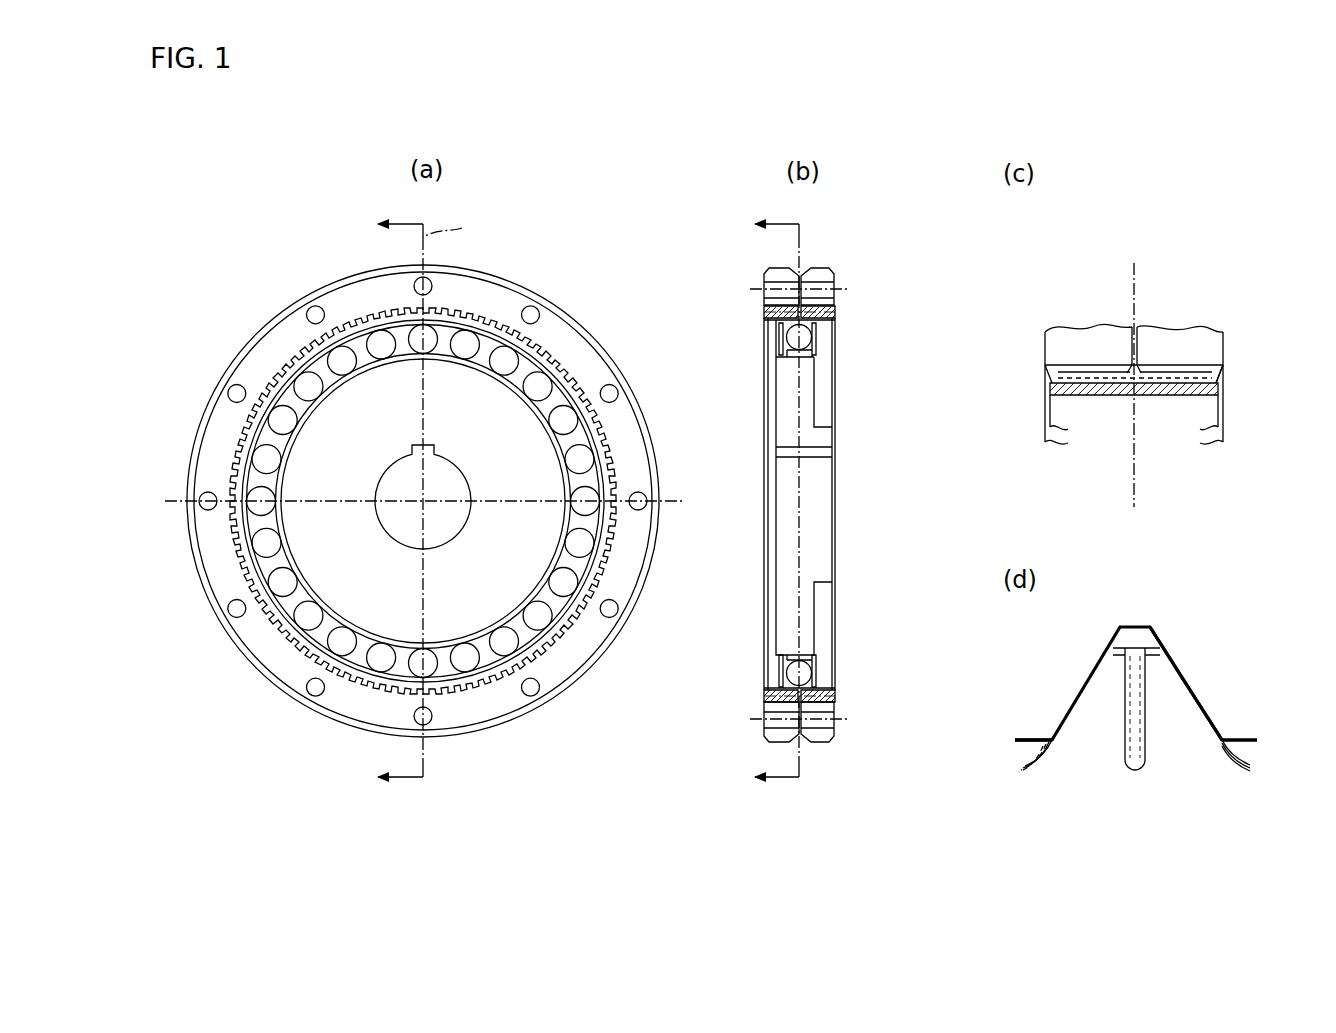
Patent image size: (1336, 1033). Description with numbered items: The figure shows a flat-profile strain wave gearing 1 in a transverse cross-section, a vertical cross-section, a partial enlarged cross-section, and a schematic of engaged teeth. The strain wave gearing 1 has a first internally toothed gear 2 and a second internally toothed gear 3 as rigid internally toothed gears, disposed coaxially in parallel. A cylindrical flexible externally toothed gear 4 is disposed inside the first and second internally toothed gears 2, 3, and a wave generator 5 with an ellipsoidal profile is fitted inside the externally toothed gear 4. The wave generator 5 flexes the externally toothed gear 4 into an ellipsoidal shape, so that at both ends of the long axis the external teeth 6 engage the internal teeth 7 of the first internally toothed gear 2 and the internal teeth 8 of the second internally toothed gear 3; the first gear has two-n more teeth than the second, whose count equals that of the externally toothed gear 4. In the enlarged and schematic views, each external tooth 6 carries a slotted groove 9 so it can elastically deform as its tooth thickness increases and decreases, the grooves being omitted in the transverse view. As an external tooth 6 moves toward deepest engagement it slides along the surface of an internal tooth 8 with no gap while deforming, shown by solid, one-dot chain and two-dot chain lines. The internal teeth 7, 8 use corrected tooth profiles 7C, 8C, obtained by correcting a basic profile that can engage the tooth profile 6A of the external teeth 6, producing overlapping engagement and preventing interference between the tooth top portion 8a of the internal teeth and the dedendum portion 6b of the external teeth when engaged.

The strain wave gearing 1 is at (560, 266).
The first internally toothed gear 2 is at (837, 302).
The second internally toothed gear 3 is at (594, 386).
The flexible externally toothed gear 4 is at (597, 424).
The wave generator 5 is at (537, 559).
The external tooth 6 is at (567, 377).
The internal tooth of the first internally toothed gear 7 is at (819, 319).
The internal tooth of the second internally toothed gear 8 is at (553, 362).
The slotted groove 9 is at (1133, 732).
The tooth profile of the external teeth 6A is at (1209, 704).
The tooth bottom 6b is at (1052, 758).
The tooth tip surface 8a is at (1040, 728).
The corrected tooth profile of the internal teeth 8 8C is at (1168, 677).
The corrected tooth profile of the internal teeth 7 7C is at (1195, 388).